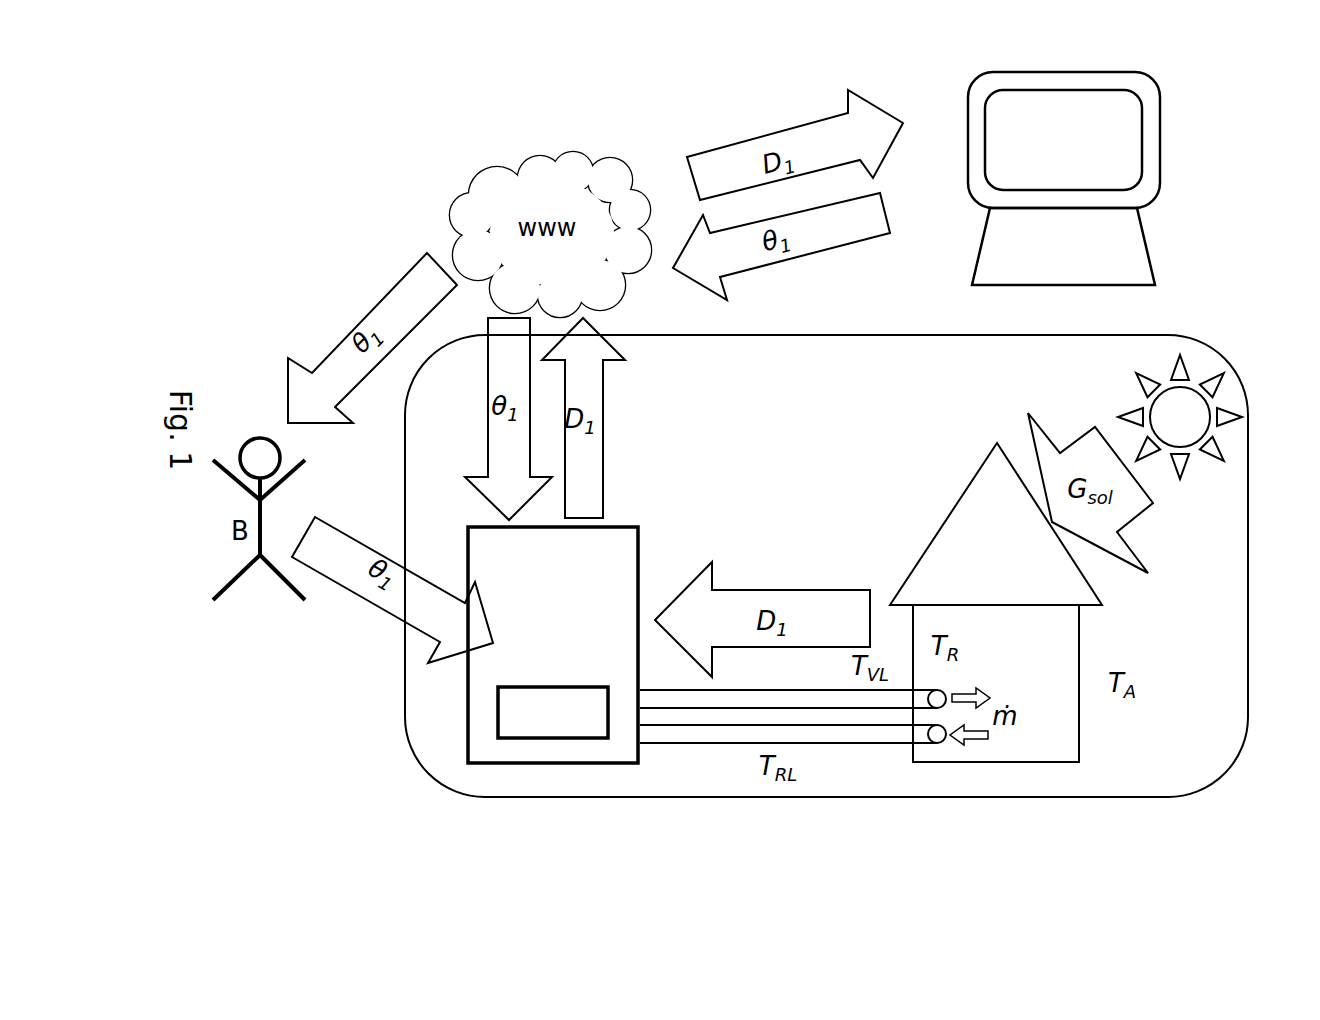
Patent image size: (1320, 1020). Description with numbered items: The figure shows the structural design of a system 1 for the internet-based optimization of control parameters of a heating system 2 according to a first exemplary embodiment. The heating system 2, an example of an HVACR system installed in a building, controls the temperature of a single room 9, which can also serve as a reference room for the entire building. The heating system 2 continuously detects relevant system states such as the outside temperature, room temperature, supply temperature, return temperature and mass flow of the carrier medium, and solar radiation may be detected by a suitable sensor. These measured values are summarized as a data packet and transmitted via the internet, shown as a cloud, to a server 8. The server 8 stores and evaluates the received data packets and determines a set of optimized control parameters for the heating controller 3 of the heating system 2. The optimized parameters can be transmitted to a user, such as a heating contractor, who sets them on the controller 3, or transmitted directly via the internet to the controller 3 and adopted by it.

The system 1 is at (328, 118).
The heating system 2 is at (553, 645).
The heating controller 3 is at (553, 712).
The server 8 is at (1064, 178).
The room 9 is at (1018, 668).